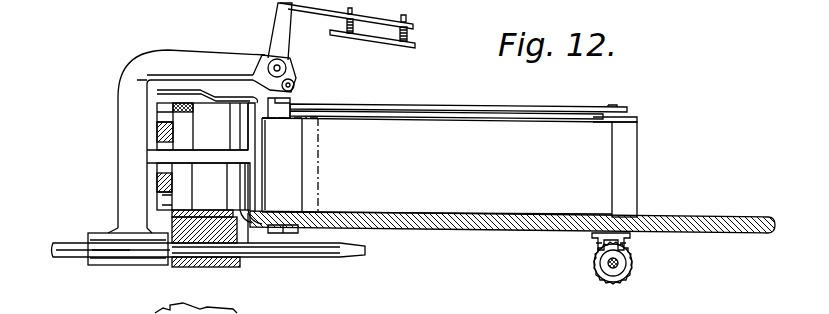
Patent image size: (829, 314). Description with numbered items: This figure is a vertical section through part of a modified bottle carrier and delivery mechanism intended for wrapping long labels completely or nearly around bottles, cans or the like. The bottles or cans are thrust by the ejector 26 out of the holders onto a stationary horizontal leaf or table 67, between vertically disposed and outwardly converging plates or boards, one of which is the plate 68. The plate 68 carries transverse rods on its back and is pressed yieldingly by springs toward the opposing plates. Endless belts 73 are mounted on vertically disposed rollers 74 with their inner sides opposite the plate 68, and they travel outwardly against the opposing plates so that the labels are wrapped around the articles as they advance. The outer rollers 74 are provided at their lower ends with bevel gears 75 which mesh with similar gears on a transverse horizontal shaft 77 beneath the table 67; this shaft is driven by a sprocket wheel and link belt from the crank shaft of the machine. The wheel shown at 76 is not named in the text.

The ejector 26 is at (114, 142).
The stationary horizontal leaf or table 67 is at (710, 218).
The plate or board 68 is at (437, 175).
The endless belt 73 is at (638, 160).
The roller 74 is at (310, 111).
The bevel gear 75 is at (592, 245).
The wheel 76 is at (613, 281).
The transverse horizontal shaft 77 is at (630, 266).